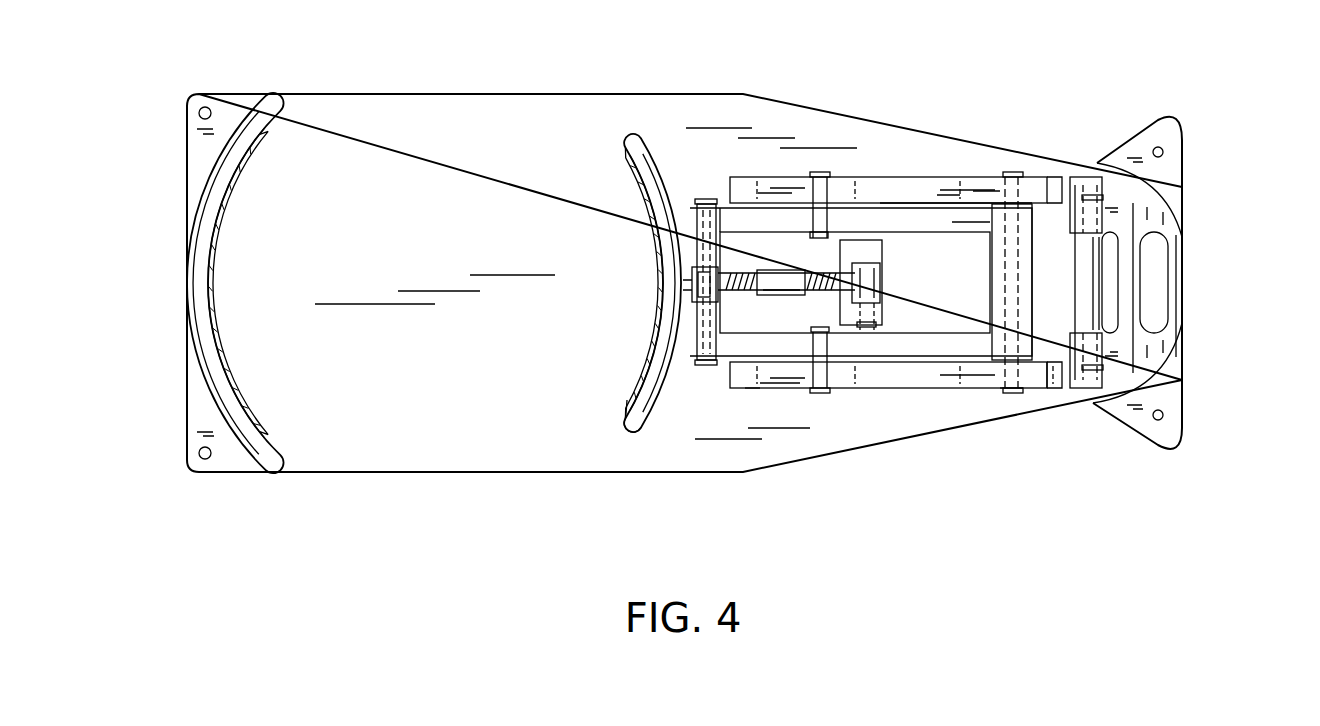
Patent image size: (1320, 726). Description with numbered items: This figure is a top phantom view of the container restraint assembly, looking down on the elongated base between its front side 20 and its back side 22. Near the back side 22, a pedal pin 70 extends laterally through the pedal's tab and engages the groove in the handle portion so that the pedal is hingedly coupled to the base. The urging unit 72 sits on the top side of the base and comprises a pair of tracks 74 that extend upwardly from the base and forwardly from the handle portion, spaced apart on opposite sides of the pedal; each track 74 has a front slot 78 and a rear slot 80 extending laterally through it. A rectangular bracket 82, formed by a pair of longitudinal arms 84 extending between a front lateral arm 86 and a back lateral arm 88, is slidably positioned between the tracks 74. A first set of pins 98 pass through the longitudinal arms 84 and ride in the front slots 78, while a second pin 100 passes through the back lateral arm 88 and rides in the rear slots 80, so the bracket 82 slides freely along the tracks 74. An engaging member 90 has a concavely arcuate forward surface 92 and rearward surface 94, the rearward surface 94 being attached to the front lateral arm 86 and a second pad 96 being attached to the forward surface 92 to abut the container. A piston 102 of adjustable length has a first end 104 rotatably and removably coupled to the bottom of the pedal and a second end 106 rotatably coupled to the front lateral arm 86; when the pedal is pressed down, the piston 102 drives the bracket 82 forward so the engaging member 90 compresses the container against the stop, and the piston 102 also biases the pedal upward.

The front side 20 is at (187, 128).
The back side 22 is at (1186, 190).
The pedal pin 70 is at (1099, 195).
The urging unit 72 is at (891, 170).
The tracks 74 is at (780, 177).
The front slot 78 is at (774, 400).
The rear slot 80 is at (1038, 393).
The bracket 82 is at (728, 207).
The longitudinal arms 84 is at (978, 355).
The front lateral arm 86 is at (724, 248).
The back lateral arm 88 is at (1033, 238).
The engaging member 90 is at (633, 130).
The forward surface 92 is at (627, 166).
The rearward surface 94 is at (656, 152).
The second pad 96 is at (622, 405).
The first set of pins 98 is at (820, 172).
The second pin 100 is at (1008, 394).
The piston 102 is at (770, 296).
The first end 104 is at (882, 283).
The second end 106 is at (692, 280).